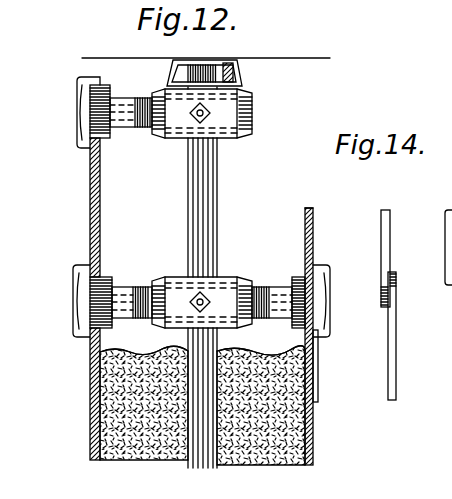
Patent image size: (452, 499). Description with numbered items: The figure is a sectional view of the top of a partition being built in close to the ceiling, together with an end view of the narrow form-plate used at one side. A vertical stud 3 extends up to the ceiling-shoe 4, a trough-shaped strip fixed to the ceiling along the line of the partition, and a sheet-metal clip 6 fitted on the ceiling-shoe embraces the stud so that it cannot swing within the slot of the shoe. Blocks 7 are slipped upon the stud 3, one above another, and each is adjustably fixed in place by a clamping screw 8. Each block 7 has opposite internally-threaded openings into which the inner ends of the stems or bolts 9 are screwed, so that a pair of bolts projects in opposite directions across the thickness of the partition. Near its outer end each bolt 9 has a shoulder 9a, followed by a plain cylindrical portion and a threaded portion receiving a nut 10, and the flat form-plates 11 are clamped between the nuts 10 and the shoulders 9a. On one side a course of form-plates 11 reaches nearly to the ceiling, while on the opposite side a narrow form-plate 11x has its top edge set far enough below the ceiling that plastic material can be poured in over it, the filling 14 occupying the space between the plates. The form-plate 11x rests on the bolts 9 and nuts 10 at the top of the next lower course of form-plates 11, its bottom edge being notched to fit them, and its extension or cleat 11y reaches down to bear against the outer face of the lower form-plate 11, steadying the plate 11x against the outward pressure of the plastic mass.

In FIG. 12, the stud 3 is at (217, 197).
In FIG. 12, the ceiling-shoe 4 is at (228, 77).
In FIG. 12, the clip 6 is at (243, 71).
In FIG. 12, the block 7 is at (254, 117).
In FIG. 12, the clamping screw 8 is at (202, 116).
In FIG. 12, the stem or bolt (form-support) 9 is at (128, 128).
In FIG. 12, the shoulder 9a is at (97, 86).
In FIG. 12, the nut 10 is at (82, 88).
In FIG. 12, the form-plate (form) 11 is at (90, 192).
In FIG. 12, the narrow form-plate 11x is at (309, 208).
In FIG. 14, the narrow form-plate 11x is at (392, 216).
In FIG. 12, the extension or cleat 11y is at (318, 386).
In FIG. 14, the extension or cleat 11y is at (396, 362).
In FIG. 12, the insulating filling 14 is at (150, 447).